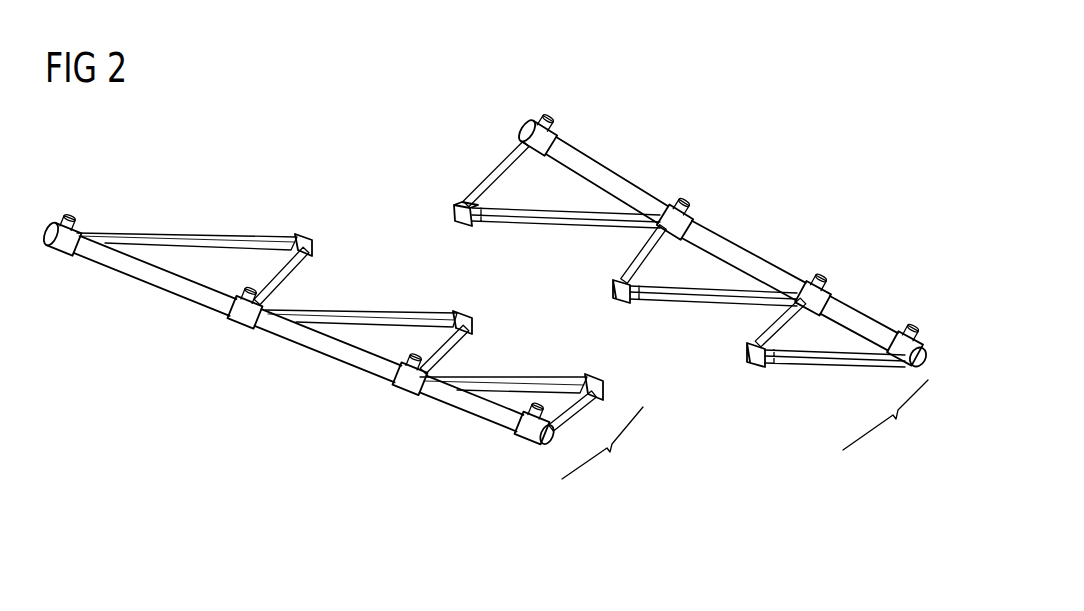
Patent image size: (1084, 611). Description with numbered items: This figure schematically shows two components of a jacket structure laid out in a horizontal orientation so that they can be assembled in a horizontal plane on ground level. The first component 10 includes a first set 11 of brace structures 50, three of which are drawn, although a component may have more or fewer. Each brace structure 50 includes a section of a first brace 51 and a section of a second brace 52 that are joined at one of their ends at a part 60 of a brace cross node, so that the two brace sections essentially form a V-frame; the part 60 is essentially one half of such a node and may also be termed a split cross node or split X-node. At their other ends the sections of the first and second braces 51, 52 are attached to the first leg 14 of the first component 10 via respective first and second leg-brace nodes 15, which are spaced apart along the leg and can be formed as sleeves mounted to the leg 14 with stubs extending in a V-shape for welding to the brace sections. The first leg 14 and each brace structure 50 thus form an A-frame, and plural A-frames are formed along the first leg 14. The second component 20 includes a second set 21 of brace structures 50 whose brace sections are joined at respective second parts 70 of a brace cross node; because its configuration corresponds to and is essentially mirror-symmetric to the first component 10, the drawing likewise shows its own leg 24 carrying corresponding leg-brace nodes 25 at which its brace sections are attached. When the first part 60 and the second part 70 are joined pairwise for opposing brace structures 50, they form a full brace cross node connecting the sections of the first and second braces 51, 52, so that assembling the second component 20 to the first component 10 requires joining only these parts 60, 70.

The first component 10 is at (298, 375).
The first set of brace structures 11 is at (602, 443).
The first leg 14 is at (330, 353).
The leg-brace nodes 15 is at (67, 258).
The second component 20 is at (739, 224).
The second set of brace structures 21 is at (885, 415).
The main tube of second module 24 is at (743, 260).
The hinge joint 25 is at (547, 133).
The brace structure 50 is at (491, 297).
The first brace 51 is at (165, 236).
The second brace 52 is at (284, 276).
The part of a brace cross node 60 is at (304, 243).
The second part of a brace cross node 70 is at (453, 213).